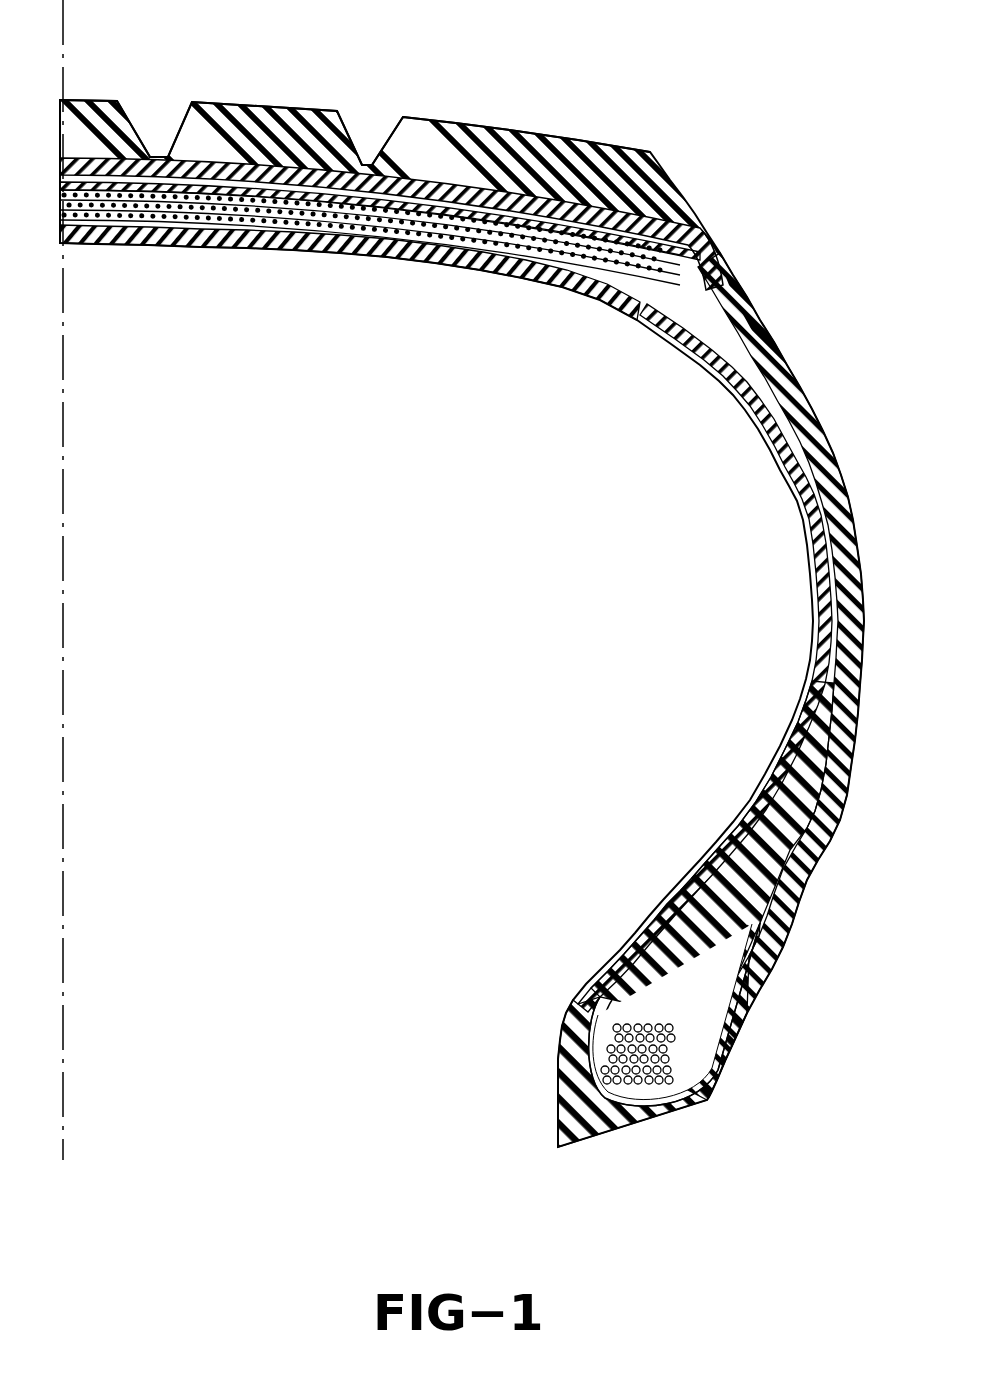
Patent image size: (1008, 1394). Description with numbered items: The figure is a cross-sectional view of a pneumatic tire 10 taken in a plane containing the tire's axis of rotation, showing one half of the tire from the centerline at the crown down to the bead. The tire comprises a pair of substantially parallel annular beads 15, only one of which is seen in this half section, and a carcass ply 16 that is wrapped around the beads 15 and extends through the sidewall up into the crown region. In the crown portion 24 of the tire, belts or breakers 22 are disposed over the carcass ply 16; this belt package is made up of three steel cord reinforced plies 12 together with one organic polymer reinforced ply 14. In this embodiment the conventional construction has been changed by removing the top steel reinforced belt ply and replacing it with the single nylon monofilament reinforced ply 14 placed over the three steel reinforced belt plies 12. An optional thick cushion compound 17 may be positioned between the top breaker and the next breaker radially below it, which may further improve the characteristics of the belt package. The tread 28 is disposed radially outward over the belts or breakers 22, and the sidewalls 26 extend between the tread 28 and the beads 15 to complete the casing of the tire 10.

The pneumatic tire 10 is at (656, 115).
The steel cord reinforced plies 12 is at (474, 230).
The organic polymer reinforced ply 14 is at (473, 200).
The annular beads 15 is at (603, 997).
The carcass ply 16 is at (836, 600).
The thick cushion compound 17 is at (364, 195).
The belts or breakers 22 is at (322, 210).
The crown portion 24 is at (98, 93).
The sidewalls 26 is at (843, 466).
The tread 28 is at (287, 100).